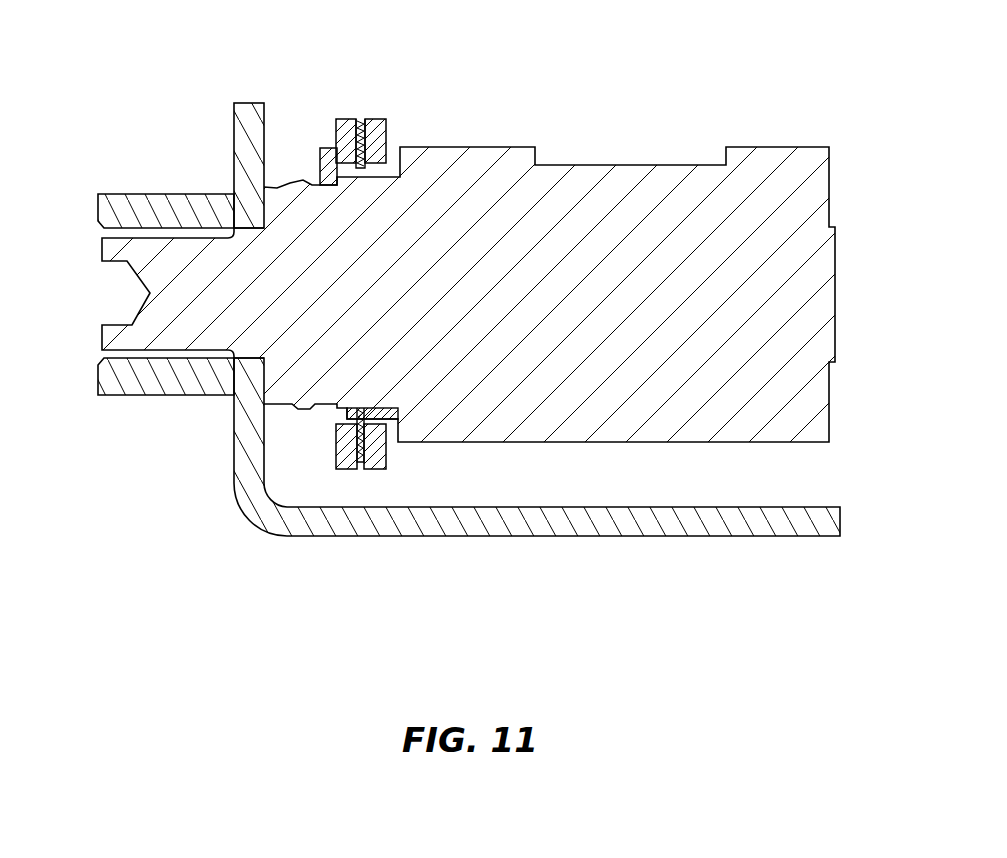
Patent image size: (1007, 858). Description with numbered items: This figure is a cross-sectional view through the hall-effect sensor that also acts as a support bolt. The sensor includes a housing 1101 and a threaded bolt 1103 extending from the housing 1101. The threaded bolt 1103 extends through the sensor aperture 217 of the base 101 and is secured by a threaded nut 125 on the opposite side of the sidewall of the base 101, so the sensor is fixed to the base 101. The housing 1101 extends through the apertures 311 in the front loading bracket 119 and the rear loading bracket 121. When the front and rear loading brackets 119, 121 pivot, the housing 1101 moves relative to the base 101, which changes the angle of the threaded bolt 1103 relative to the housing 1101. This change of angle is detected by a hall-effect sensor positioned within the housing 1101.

The base 101 is at (598, 520).
The front loading bracket 119 is at (387, 469).
The rear loading bracket 121 is at (336, 468).
The threaded nut 125 is at (158, 205).
The sensor aperture 217 is at (248, 296).
The apertures 311 is at (372, 172).
The housing 1101 is at (567, 197).
The threaded bolt 1103 is at (165, 295).